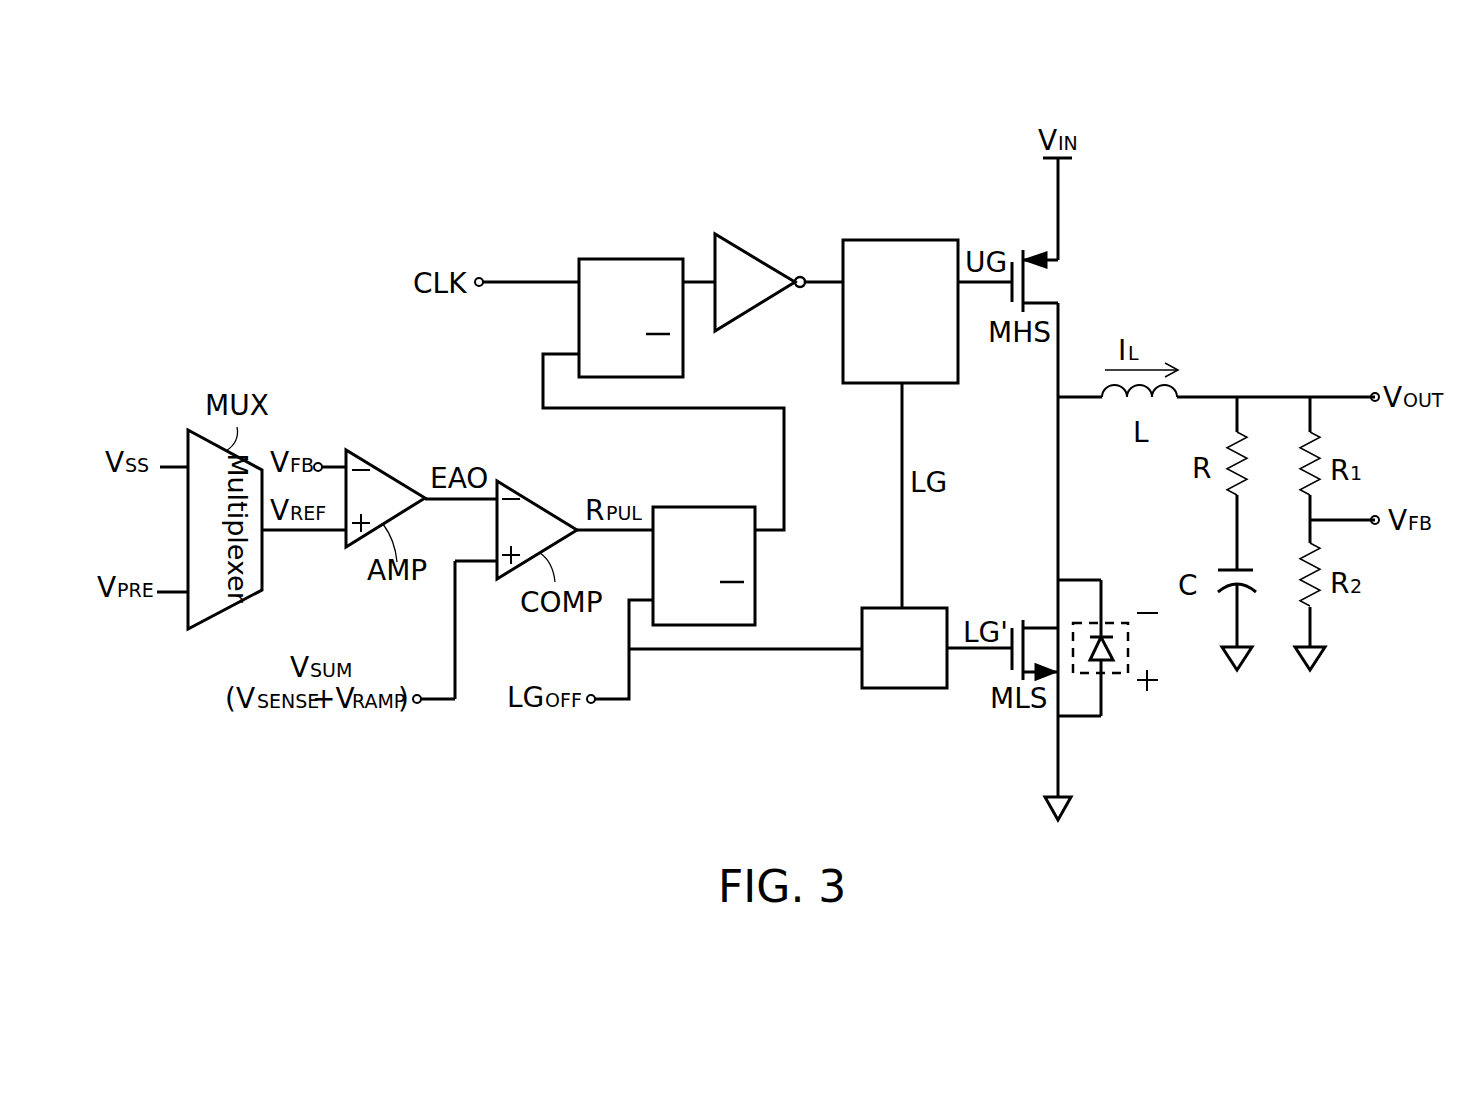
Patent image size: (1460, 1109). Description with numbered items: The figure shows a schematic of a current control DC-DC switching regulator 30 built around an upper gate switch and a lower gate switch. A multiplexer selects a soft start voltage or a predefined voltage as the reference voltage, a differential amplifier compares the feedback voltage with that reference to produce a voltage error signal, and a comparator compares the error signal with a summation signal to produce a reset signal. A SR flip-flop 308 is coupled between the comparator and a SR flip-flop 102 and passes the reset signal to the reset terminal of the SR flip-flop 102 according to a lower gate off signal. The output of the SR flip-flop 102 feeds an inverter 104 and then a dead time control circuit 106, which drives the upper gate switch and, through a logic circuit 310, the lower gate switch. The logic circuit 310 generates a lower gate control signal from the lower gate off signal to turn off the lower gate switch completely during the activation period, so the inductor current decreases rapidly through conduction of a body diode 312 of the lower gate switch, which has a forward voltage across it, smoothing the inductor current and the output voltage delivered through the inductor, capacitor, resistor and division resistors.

The current control DC-DC switching regulator 30 is at (1252, 122).
The SR flip-flop 102 is at (630, 259).
The inverter 104 is at (756, 255).
The dead time control circuit 106 is at (900, 240).
The SR flip-flop 308 is at (703, 507).
The logic circuit 310 is at (900, 689).
The body diode 312 is at (1122, 674).